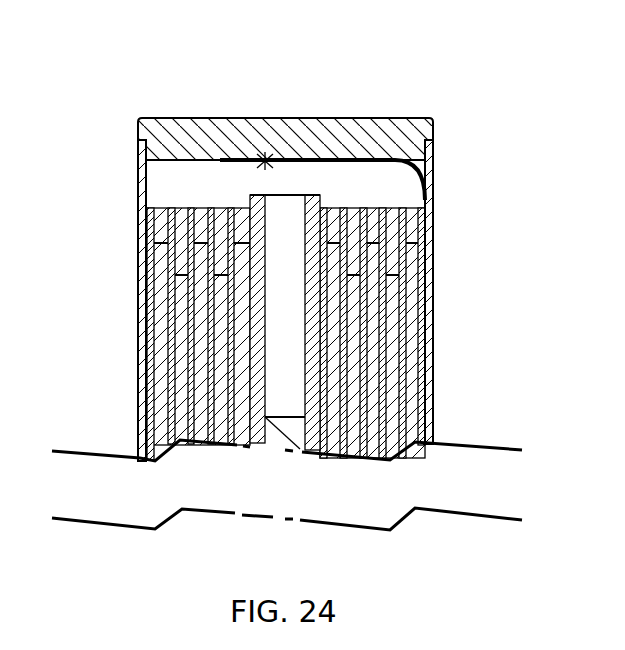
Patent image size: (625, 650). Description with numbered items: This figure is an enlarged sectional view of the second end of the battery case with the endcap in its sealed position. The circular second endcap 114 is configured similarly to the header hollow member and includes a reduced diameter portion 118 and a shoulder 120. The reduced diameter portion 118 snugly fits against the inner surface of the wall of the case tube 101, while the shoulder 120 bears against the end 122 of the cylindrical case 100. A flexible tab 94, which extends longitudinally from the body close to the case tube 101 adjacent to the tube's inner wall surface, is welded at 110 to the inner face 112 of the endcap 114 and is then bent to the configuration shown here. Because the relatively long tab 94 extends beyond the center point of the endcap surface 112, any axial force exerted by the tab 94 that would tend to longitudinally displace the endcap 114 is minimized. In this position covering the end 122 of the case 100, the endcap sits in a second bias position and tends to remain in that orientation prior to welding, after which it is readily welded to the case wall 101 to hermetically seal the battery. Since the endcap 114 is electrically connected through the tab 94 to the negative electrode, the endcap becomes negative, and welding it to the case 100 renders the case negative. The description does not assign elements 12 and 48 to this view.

The container wall / surface 12 is at (283, 433).
The central tube 48 is at (262, 381).
The tab 94 is at (345, 160).
The cylindrical case 100 is at (435, 377).
The case tube 101 is at (435, 302).
The weld 110 is at (265, 158).
The inner face 112 is at (167, 160).
The second endcap 114 is at (435, 127).
The reduced diameter portion 118 is at (418, 123).
The shoulder 120 is at (138, 138).
The end 122 is at (435, 142).